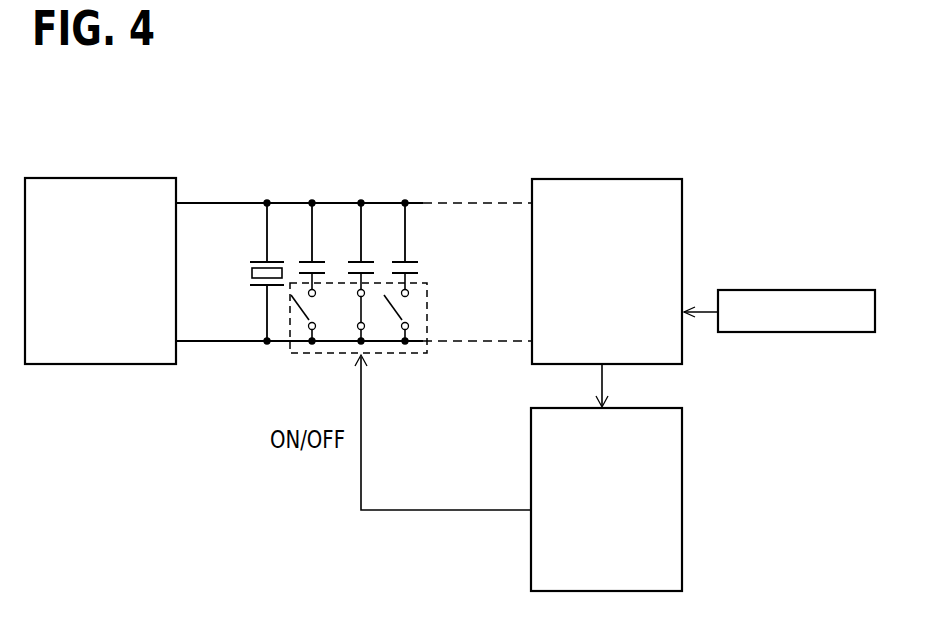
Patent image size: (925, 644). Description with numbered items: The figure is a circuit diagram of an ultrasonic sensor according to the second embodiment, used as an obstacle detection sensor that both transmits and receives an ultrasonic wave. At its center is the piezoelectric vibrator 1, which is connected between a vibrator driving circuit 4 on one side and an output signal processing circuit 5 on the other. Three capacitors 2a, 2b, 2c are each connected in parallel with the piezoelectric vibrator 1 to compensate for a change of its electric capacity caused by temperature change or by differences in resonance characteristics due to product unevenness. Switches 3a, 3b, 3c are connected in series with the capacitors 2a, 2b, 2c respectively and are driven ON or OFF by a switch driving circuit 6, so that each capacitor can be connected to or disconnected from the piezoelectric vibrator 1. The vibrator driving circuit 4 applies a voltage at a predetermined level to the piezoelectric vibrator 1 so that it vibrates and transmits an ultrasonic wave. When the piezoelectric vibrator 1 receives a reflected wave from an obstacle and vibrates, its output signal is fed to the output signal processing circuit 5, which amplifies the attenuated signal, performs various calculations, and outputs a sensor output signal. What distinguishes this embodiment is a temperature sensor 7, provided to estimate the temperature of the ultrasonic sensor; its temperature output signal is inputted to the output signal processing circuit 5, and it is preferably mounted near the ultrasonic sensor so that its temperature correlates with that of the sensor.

The piezoelectric vibrator 1 is at (252, 262).
The capacitor 2a is at (303, 261).
The capacitor 2b is at (353, 261).
The capacitor 2c is at (413, 261).
The switch 3a is at (297, 312).
The switch 3b is at (357, 309).
The switch 3c is at (388, 324).
The vibrator driving circuit 4 is at (78, 365).
The output signal processing circuit 5 is at (683, 258).
The switch driving circuit 6 is at (683, 487).
The temperature sensor 7 is at (768, 333).